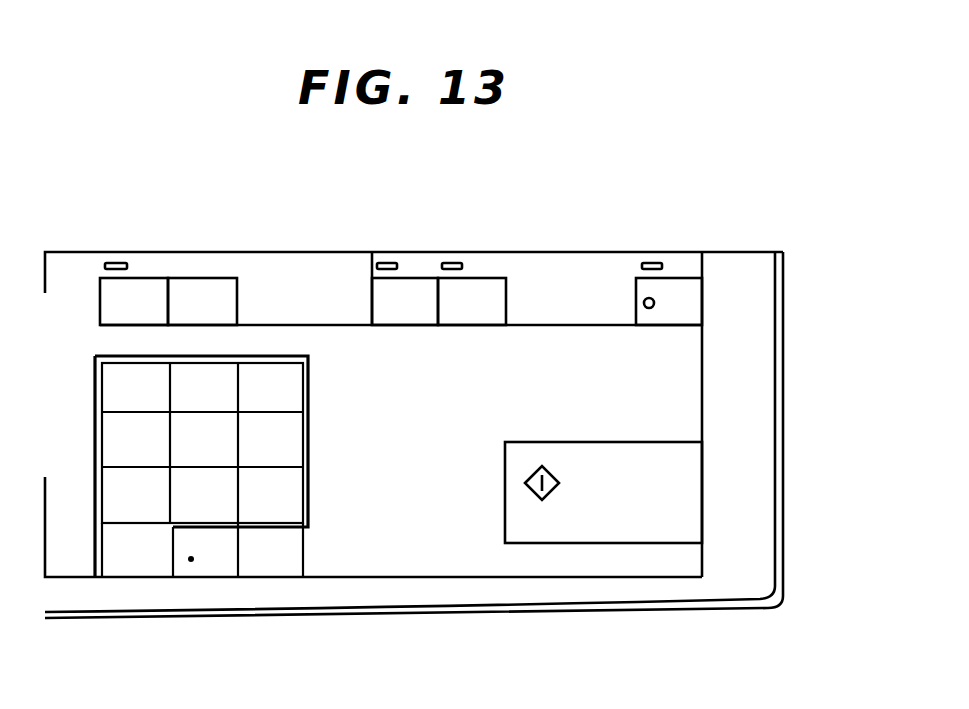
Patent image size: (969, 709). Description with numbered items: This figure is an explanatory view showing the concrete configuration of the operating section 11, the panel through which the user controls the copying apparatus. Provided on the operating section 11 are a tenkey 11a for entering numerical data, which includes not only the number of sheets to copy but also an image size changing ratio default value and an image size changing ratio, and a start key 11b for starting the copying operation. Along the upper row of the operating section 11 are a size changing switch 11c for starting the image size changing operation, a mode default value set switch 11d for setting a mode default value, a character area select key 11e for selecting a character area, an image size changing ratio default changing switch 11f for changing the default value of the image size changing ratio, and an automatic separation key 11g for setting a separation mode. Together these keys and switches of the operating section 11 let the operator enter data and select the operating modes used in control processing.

The operating section 11 is at (783, 409).
The tenkey 11a is at (325, 358).
The start key 11b is at (615, 520).
The size changing switch 11c is at (694, 297).
The mode default value set switch 11d is at (490, 291).
The character area select key 11e is at (407, 286).
The image size changing ratio default changing switch 11f is at (151, 278).
The automatic separation key 11g is at (217, 279).